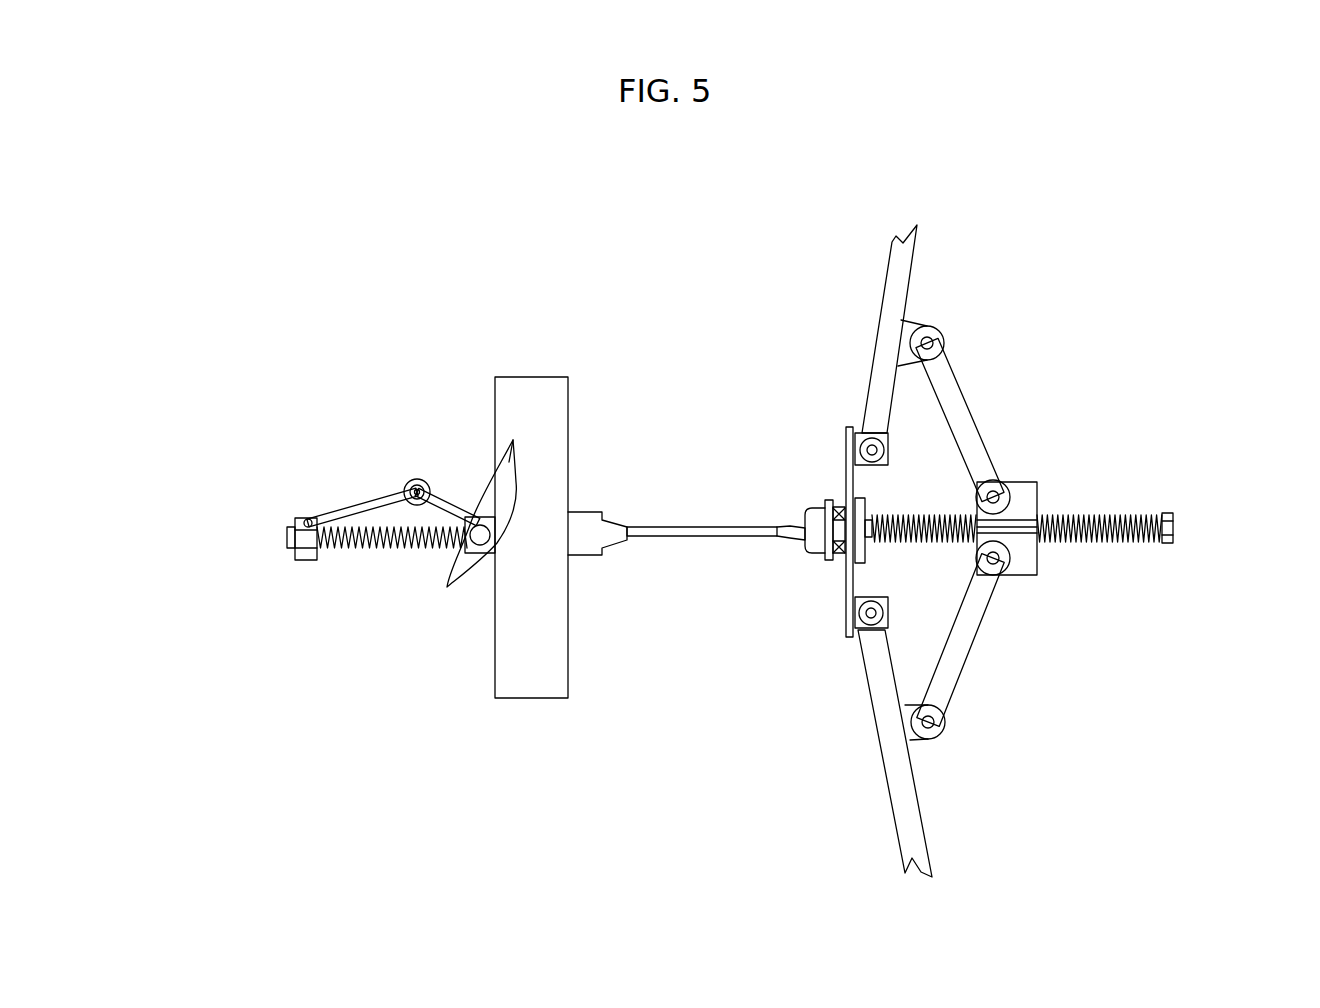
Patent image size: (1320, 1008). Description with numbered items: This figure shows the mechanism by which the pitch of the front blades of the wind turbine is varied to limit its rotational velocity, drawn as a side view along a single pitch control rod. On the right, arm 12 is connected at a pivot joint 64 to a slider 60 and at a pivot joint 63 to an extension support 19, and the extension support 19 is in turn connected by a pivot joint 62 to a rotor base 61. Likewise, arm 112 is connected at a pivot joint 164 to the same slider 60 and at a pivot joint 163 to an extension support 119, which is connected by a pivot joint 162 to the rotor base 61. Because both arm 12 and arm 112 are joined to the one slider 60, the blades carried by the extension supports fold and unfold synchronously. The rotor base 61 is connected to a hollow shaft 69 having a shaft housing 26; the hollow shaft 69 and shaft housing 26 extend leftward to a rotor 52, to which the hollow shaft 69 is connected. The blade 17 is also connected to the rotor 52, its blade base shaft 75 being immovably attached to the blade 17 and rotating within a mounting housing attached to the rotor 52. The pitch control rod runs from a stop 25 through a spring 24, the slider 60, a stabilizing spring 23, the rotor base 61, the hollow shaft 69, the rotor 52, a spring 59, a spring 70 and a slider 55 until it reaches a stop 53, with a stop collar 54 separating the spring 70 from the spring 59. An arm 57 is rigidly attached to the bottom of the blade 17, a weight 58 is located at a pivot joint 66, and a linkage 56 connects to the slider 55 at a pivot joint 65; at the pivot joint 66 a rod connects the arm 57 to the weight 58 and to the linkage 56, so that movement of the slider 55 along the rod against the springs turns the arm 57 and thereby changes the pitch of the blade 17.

The rotor 52 is at (555, 377).
The blade 17 is at (510, 460).
The blade base shaft 75 is at (497, 545).
The stop 53 is at (287, 547).
The slider 55 is at (298, 560).
The pivot joint 65 is at (308, 522).
The linkage 56 is at (327, 507).
The weight 58 is at (428, 480).
The pivot joint 66 is at (402, 492).
The arm 57 is at (468, 516).
The stop collar 54 is at (412, 548).
The spring 70 is at (373, 548).
The spring 59 is at (452, 549).
The extension support 119 is at (888, 250).
The pivot joint 163 is at (945, 329).
The arm 112 is at (967, 381).
The pivot joint 164 is at (1000, 487).
The slider 60 is at (1040, 493).
The pivot joint 64 is at (998, 563).
The arm 12 is at (967, 672).
The pivot joint 63 is at (945, 726).
The extension support 19 is at (898, 845).
The pivot joint 62 is at (863, 632).
The pivot joint 162 is at (862, 445).
The rotor base 61 is at (843, 483).
The hollow shaft 69 is at (787, 540).
The shaft housing 26 is at (826, 557).
The stabilizing spring 23 is at (905, 545).
The spring 24 is at (1144, 543).
The stop 25 is at (1176, 514).